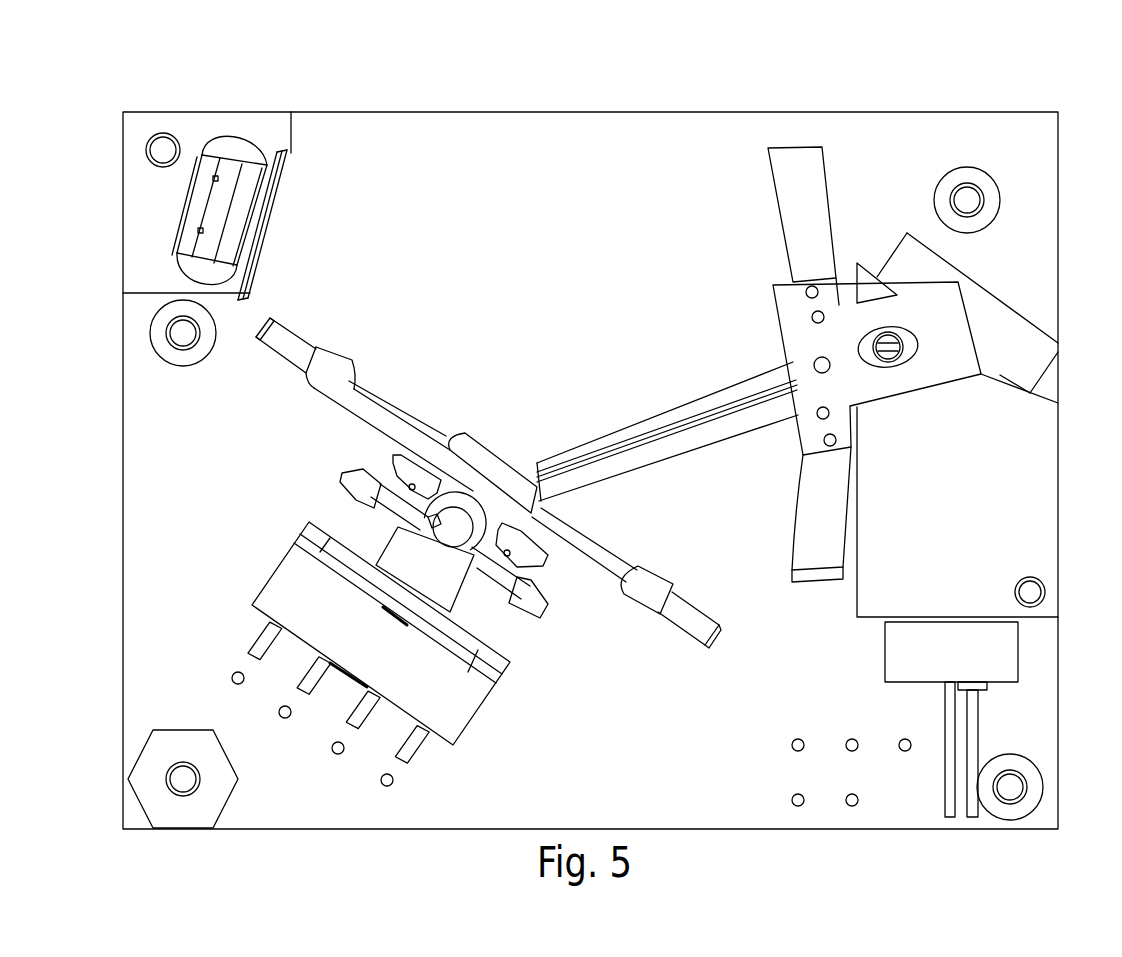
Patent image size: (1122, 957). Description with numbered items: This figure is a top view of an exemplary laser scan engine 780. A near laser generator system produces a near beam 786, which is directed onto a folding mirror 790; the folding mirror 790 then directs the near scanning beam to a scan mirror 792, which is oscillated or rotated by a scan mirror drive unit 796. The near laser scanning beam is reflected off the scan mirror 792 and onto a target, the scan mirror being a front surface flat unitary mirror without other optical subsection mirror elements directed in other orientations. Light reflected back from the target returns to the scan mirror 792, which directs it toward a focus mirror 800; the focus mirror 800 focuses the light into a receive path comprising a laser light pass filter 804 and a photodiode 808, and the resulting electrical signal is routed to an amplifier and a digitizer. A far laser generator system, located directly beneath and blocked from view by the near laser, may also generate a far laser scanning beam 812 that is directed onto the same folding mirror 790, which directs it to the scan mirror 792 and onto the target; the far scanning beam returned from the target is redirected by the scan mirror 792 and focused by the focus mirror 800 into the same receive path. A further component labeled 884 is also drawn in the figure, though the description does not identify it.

The laser scan engine 780 is at (672, 89).
The photodiode 808 is at (213, 224).
The laser light pass filter 804 is at (248, 178).
The scan mirror 792 is at (686, 603).
The far laser scanning beam 812 is at (623, 428).
The near beam 786 is at (657, 443).
The scan mirror drive unit 796 is at (500, 695).
The focus mirror 800 is at (787, 258).
The folding mirror 790 is at (1017, 323).
The terminal block 884 is at (877, 657).